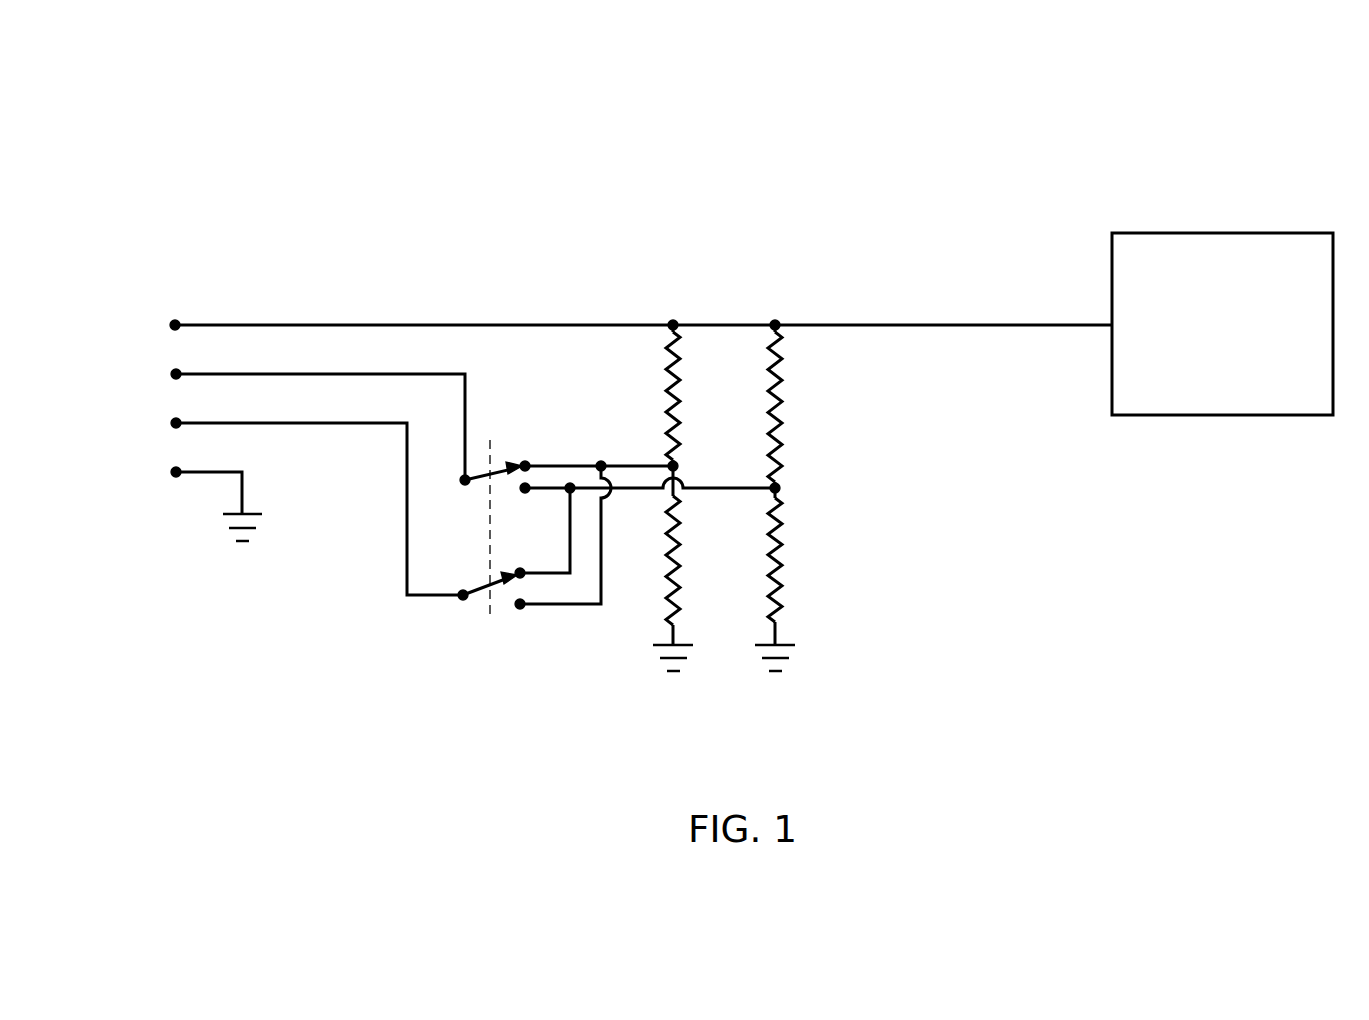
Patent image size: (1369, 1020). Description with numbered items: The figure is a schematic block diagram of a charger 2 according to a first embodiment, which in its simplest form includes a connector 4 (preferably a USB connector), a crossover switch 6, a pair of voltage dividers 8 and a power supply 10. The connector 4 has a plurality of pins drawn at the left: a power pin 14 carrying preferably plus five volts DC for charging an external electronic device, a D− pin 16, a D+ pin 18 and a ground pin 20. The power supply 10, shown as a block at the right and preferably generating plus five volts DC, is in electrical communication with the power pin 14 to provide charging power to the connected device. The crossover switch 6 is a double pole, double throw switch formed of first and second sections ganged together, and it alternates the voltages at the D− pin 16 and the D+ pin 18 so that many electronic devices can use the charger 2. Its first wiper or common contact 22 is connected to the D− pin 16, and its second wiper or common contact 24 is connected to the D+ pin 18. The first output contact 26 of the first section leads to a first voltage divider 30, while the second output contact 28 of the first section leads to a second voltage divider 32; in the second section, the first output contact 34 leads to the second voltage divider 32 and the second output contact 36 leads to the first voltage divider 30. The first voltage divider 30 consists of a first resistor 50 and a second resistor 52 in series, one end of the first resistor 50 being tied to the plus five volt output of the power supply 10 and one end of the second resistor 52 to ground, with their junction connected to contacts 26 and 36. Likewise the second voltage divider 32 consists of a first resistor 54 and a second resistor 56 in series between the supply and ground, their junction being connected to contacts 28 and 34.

The charger 2 is at (940, 702).
The connector 4 is at (214, 130).
The crossover switch 6 is at (492, 344).
The pair of voltage dividers 8 is at (708, 296).
The power supply 10 is at (1199, 196).
The power pin 14 is at (168, 325).
The D− pin 16 is at (168, 374).
The D+ pin 18 is at (168, 423).
The ground pin 20 is at (168, 472).
The first wiper or common contact 22 is at (455, 479).
The second wiper or common contact 24 is at (462, 602).
The first output contact of the first section 26 is at (531, 463).
The second output contact of the first section 28 is at (525, 493).
The first voltage divider 30 is at (706, 457).
The second voltage divider 32 is at (814, 476).
The first output contact of the second section 34 is at (525, 570).
The second output contact of the second section 36 is at (522, 613).
The first resistor 50 is at (680, 381).
The second resistor 52 is at (675, 597).
The first resistor 54 is at (779, 384).
The second resistor 56 is at (780, 587).